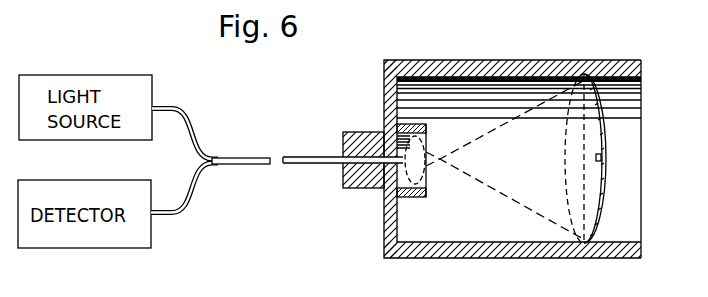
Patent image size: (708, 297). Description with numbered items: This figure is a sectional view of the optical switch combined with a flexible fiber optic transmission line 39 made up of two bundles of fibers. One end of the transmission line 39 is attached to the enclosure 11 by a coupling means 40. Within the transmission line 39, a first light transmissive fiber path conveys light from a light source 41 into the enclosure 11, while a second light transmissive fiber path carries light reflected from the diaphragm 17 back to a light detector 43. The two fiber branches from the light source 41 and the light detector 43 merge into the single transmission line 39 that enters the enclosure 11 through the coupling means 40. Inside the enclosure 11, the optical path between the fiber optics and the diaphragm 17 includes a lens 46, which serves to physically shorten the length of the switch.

The enclosure 11 is at (500, 59).
The diaphragm 17 is at (598, 212).
The flexible fiber optic transmission line 39 is at (323, 167).
The coupling means 40 is at (352, 132).
The light source 41 is at (174, 106).
The light detector 43 is at (177, 212).
The lens 46 is at (421, 171).